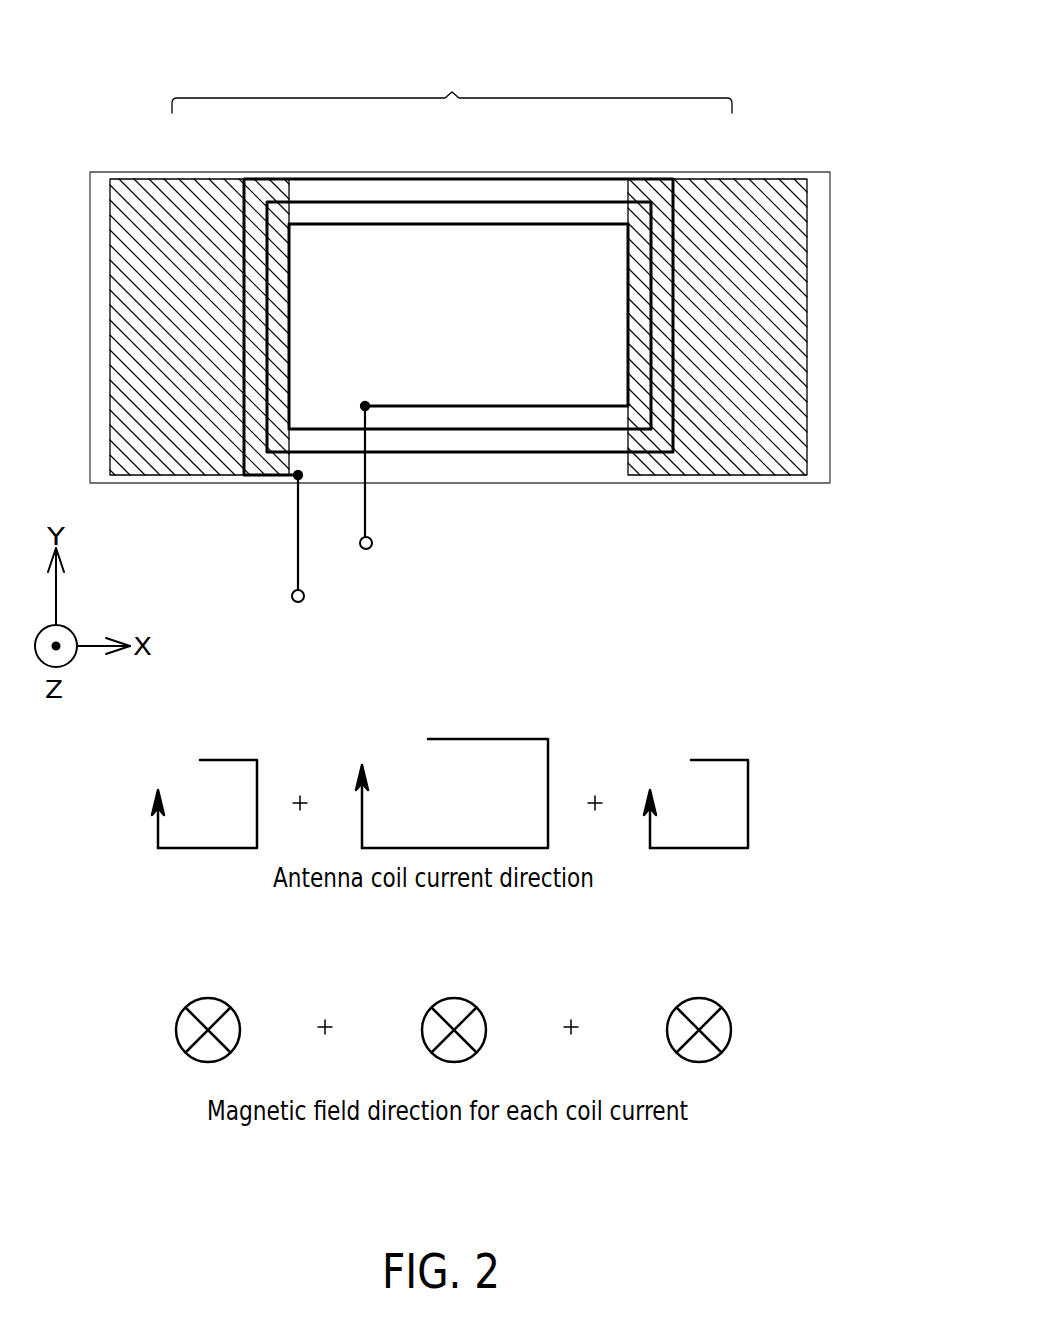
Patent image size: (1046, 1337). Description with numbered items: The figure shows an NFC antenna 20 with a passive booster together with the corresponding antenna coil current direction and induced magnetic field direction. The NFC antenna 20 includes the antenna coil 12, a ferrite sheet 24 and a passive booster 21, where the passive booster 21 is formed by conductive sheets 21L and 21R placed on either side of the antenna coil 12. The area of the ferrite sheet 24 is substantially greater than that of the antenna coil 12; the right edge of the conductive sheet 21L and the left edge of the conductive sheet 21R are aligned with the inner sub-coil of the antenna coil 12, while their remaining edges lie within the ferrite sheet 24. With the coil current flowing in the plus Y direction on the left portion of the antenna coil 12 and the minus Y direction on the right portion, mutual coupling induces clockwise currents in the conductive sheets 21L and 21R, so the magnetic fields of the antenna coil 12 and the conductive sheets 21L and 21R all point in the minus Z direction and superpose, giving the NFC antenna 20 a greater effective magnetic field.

The NFC antenna 20 is at (735, 40).
The passive booster 21 is at (452, 92).
The conductive sheet 21L is at (203, 182).
The conductive sheet 21R is at (697, 182).
The ferrite sheet 24 is at (530, 472).
The antenna coil 12 is at (608, 453).